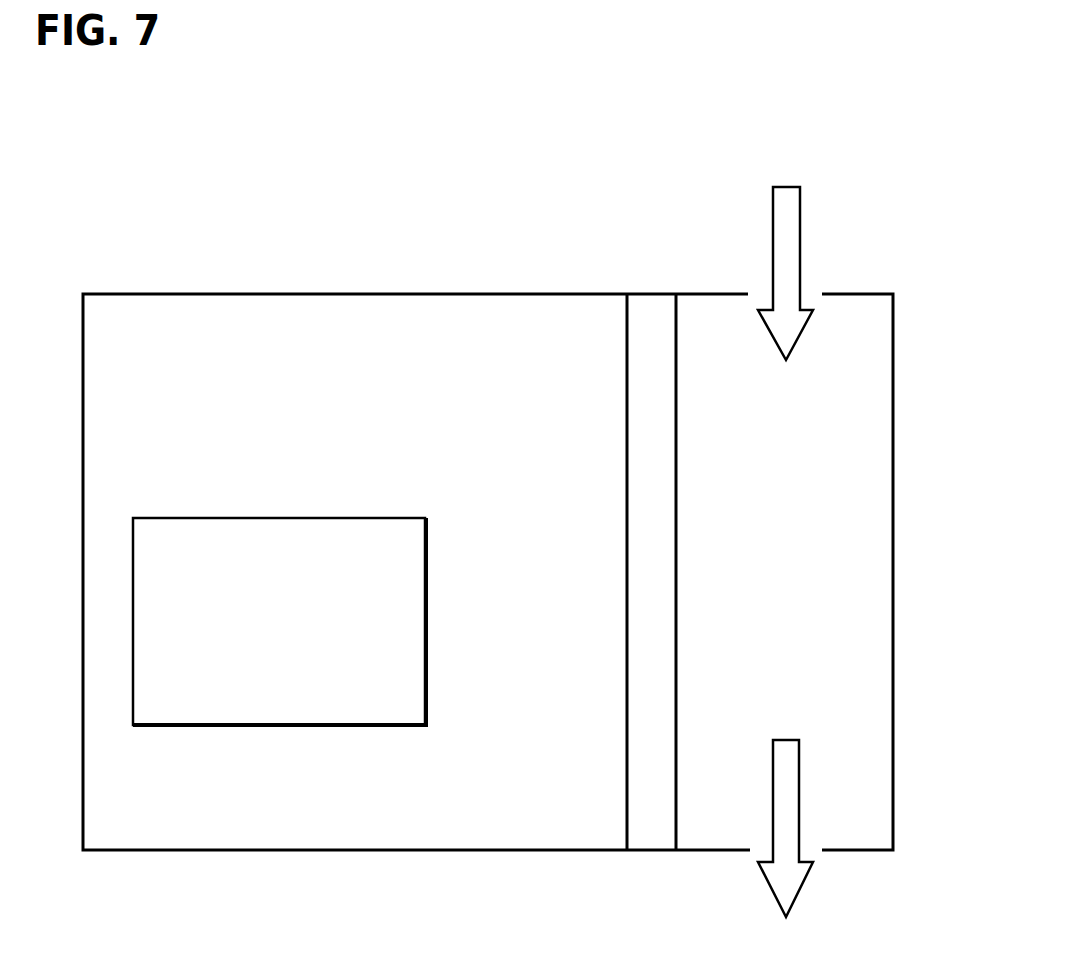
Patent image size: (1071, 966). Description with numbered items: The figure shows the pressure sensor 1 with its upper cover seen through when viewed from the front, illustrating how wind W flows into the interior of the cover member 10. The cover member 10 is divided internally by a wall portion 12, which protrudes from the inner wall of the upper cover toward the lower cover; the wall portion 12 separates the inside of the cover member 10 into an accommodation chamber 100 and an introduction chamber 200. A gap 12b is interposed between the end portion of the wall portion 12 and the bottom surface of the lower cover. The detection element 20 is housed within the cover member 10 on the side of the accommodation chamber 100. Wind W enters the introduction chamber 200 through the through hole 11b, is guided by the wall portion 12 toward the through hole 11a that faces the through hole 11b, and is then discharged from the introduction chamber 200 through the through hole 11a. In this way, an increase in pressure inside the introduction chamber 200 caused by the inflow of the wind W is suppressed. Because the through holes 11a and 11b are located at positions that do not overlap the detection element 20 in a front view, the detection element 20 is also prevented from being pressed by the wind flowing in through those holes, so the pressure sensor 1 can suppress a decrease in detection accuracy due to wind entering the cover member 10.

The pressure sensor 1 is at (175, 192).
The cover member 10 is at (218, 294).
The accommodation chamber 100 is at (233, 417).
The introduction chamber 200 is at (856, 418).
The wall portion 12 is at (627, 565).
The gap 12b is at (676, 548).
The detection element 20 is at (320, 518).
The through hole 11b is at (813, 297).
The through hole 11a is at (820, 852).
The wind W is at (778, 186).